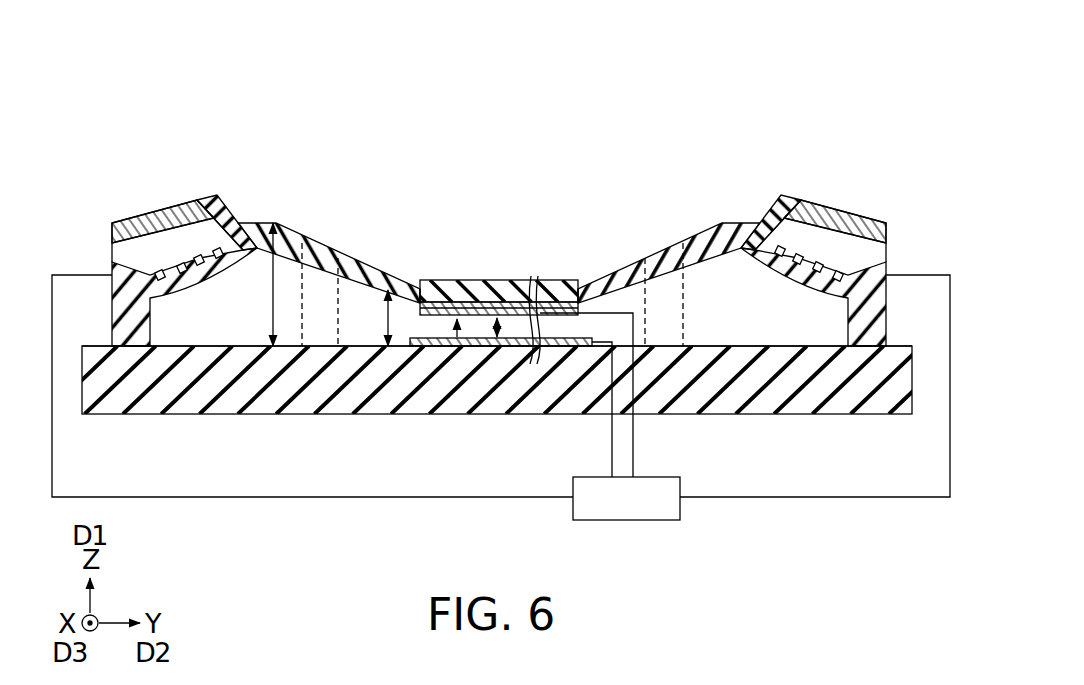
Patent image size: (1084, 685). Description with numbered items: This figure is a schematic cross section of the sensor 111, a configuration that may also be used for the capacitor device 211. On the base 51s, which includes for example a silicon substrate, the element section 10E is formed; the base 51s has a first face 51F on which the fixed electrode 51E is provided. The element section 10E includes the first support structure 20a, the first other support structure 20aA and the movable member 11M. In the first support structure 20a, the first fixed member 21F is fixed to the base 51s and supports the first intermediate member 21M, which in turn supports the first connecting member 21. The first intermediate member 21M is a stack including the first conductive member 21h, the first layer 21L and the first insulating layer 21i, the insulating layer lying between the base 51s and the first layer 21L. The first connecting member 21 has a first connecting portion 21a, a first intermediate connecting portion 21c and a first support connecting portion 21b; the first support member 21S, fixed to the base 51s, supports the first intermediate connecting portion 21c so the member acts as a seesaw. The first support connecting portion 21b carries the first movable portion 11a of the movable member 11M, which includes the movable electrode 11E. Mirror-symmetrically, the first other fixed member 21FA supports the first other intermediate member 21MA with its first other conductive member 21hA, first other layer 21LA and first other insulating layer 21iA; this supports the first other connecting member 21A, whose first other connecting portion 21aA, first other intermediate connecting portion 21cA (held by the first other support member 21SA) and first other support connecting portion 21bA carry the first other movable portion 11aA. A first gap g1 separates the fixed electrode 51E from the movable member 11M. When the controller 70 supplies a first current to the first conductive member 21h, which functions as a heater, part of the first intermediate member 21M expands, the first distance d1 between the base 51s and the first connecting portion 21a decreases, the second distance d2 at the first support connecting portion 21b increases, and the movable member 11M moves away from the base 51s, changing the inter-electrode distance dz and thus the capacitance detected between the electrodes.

The capacitor device 211 is at (756, 69).
The sensor 111 is at (680, 94).
The element section 10E is at (604, 110).
The first support structure 20a is at (244, 140).
The first other support structure 20aA is at (753, 135).
The first intermediate member 21M is at (210, 152).
The first other intermediate member 21MA is at (953, 152).
The first conductive member 21h is at (118, 230).
The first layer 21L is at (155, 240).
The first insulating layer 21i is at (180, 262).
The first other conductive member 21hA is at (880, 230).
The first other layer 21LA is at (845, 238).
The first other insulating layer 21iA is at (800, 255).
The first connecting member 21 is at (312, 243).
The first other connecting member 21A is at (685, 239).
The first connecting portion 21a is at (284, 226).
The first intermediate connecting portion 21c is at (334, 262).
The first support connecting portion 21b is at (382, 274).
The first other connecting portion 21aA is at (716, 224).
The first other intermediate connecting portion 21cA is at (666, 260).
The first other support connecting portion 21bA is at (607, 274).
The first fixed member 21F is at (138, 330).
The first other fixed member 21FA is at (868, 330).
The first support member 21S is at (300, 300).
The first other support member 21SA is at (688, 300).
The first movable portion 11a is at (428, 282).
The first other movable portion 11aA is at (566, 280).
The movable member 11M is at (466, 292).
The movable electrode 11E is at (502, 290).
The fixed electrode 51E is at (462, 348).
The base 51s is at (240, 398).
The first face 51F is at (758, 341).
The controller 70 is at (683, 508).
The first distance d1 is at (270, 304).
The second distance d2 is at (390, 330).
The first gap g1 is at (454, 340).
The inter-electrode distance dz is at (531, 365).